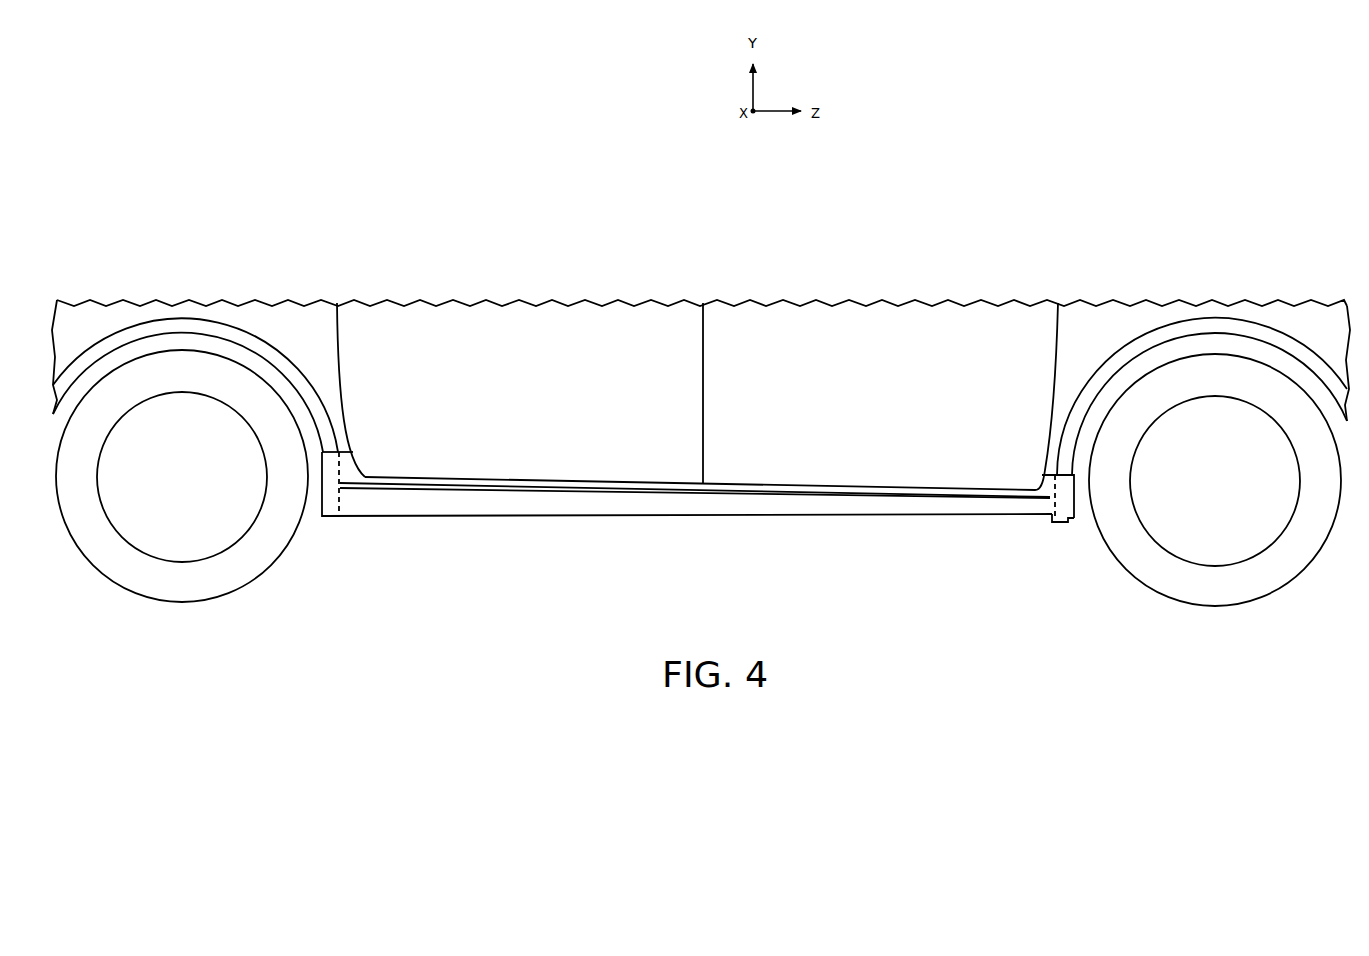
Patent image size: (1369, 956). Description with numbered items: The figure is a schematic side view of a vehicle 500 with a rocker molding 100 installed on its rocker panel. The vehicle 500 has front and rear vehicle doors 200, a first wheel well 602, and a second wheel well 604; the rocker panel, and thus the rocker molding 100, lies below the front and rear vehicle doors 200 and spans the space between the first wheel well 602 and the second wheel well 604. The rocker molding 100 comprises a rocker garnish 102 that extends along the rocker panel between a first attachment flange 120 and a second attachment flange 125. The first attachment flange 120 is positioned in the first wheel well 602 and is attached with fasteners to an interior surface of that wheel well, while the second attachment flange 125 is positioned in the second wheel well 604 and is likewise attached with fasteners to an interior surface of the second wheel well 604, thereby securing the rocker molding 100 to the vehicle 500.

The rocker molding 100 is at (698, 538).
The rocker garnish 102 is at (573, 503).
The first attachment flange 120 is at (333, 495).
The second attachment flange 125 is at (1060, 502).
The front and rear vehicle doors 200 is at (591, 313).
The vehicle 500 is at (1054, 249).
The first wheel well 602 is at (313, 407).
The second wheel well 604 is at (1070, 432).